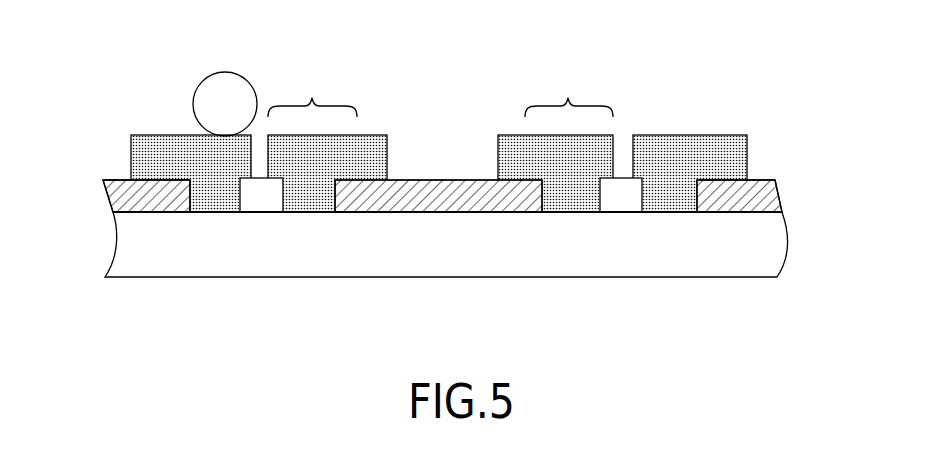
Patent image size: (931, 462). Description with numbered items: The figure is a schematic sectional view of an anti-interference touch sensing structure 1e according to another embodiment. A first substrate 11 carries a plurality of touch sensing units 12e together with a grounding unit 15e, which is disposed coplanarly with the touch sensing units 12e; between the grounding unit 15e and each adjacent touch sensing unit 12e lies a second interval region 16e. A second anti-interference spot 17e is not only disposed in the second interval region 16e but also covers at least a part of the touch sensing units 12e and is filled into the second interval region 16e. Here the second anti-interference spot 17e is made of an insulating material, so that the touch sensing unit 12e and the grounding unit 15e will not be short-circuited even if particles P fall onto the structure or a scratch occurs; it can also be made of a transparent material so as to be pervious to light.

The anti-interference touch sensing structure 1e is at (153, 54).
The particles P is at (221, 80).
The first substrate 11 is at (750, 252).
The touch sensing units 12e is at (125, 200).
The grounding unit 15e is at (258, 198).
The second interval region 16e is at (440, 93).
The second anti-interference spot 17e is at (145, 160).